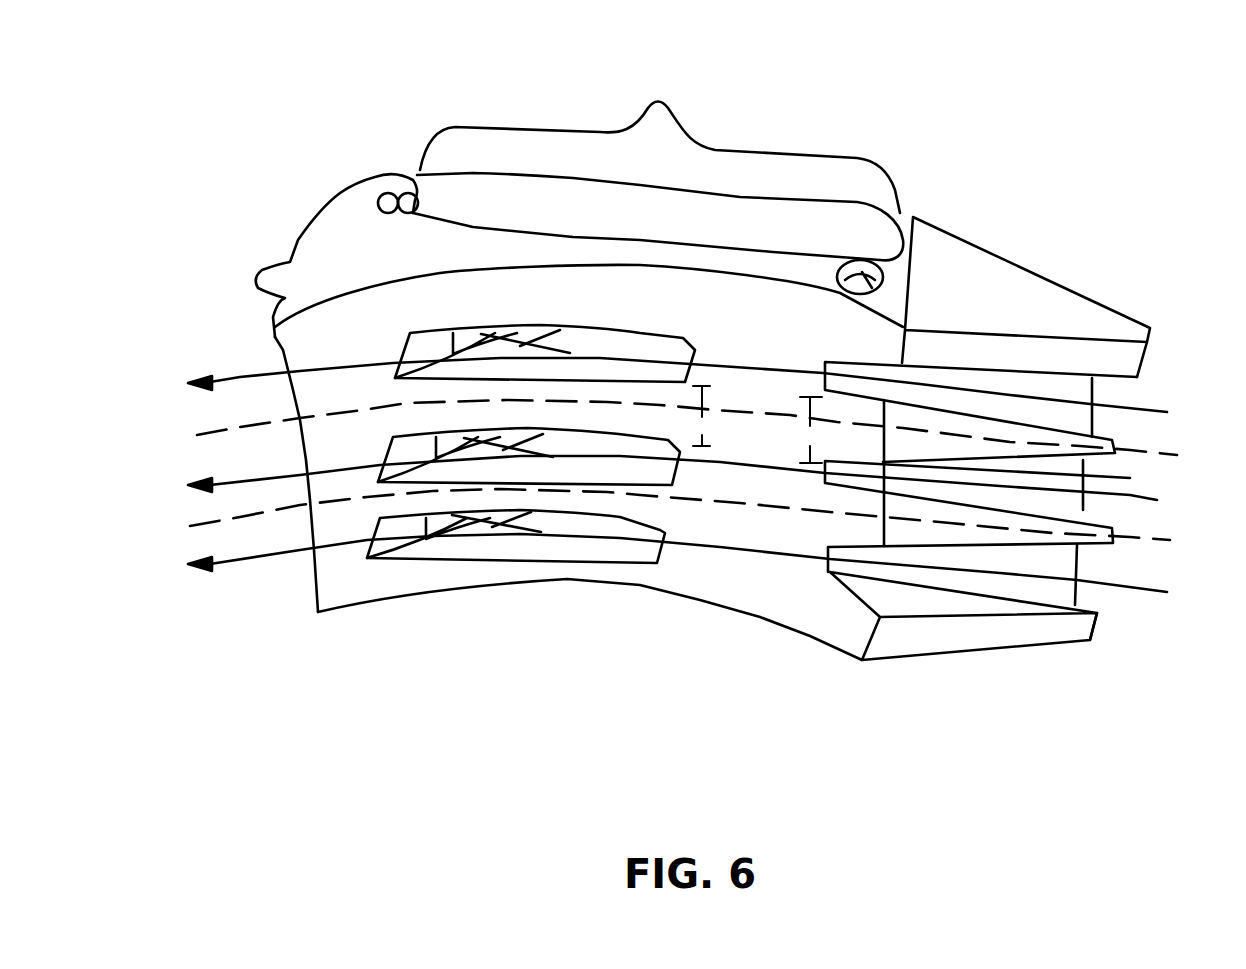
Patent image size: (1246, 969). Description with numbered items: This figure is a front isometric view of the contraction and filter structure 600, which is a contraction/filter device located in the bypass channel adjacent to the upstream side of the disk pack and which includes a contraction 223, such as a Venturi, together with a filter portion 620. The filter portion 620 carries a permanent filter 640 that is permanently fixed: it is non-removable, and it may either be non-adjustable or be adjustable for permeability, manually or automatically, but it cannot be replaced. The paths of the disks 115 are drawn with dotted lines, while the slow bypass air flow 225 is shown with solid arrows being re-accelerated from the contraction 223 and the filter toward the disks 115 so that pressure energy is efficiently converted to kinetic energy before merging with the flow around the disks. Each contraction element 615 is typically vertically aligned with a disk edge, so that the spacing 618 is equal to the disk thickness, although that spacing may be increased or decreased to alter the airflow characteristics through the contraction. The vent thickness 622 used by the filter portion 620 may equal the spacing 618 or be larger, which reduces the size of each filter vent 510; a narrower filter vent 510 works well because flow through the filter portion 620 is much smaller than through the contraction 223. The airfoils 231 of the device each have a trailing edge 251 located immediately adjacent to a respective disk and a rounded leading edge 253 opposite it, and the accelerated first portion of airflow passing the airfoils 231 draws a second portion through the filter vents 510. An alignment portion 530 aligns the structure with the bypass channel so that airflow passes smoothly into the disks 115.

The contraction and filter structure 600 is at (783, 37).
The filter portion 620 is at (660, 143).
The permanent filter 640 is at (681, 234).
The alignment portion 530 is at (878, 265).
The slow bypass air flow 225 is at (653, 475).
The disks 115 is at (659, 470).
The vent thickness 622 is at (695, 416).
The contraction spacing 618 is at (809, 430).
The contraction element 615 is at (1030, 447).
The filter vent 510 is at (488, 543).
The trailing edge 251 is at (697, 573).
The airfoil 231 is at (967, 608).
The leading edge 253 is at (1100, 630).
The contraction 223 is at (1072, 723).